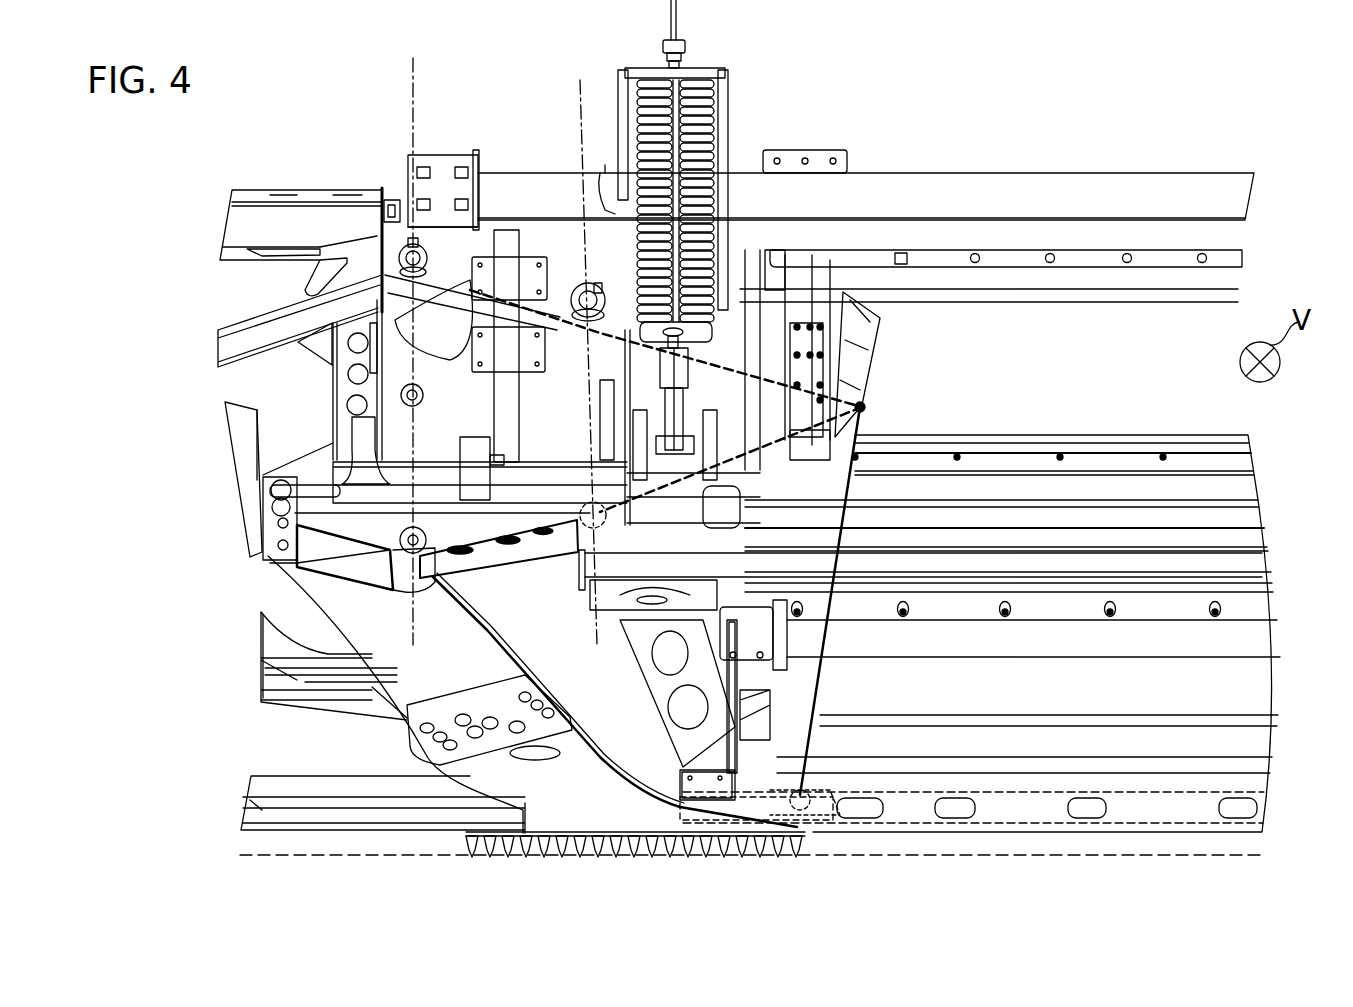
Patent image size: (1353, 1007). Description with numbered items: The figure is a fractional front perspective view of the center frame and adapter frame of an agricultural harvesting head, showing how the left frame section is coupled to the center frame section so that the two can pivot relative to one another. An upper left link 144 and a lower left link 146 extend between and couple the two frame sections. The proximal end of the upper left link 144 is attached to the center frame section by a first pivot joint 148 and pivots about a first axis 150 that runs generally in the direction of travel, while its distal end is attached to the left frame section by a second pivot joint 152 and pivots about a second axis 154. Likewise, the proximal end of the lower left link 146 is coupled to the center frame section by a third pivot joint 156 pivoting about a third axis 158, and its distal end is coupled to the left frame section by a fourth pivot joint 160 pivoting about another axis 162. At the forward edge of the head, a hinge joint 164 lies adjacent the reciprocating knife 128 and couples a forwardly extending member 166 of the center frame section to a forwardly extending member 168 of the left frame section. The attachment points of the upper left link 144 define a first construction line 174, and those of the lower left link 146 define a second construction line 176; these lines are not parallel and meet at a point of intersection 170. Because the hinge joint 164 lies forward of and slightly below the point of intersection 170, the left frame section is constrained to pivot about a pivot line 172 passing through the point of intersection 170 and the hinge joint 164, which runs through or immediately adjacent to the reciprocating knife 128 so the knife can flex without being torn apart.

The reciprocating knife 128 is at (860, 856).
The upper left link 144 is at (447, 283).
The lower left link 146 is at (455, 580).
The first pivot joint 148 is at (572, 308).
The first axis 150 is at (578, 86).
The second pivot joint 152 is at (393, 276).
The second axis 154 is at (412, 70).
The third pivot joint 156 is at (580, 530).
The third axis 158 is at (597, 647).
The fourth pivot joint 160 is at (300, 565).
The second axis 162 is at (412, 628).
The hinge joint 164 is at (820, 810).
The forwardly extending member 166 is at (738, 805).
The forwardly extending member 168 is at (653, 813).
The point of intersection 170 is at (863, 407).
The pivot line 172 is at (827, 668).
The first construction line 174 is at (768, 383).
The second construction line 176 is at (860, 440).